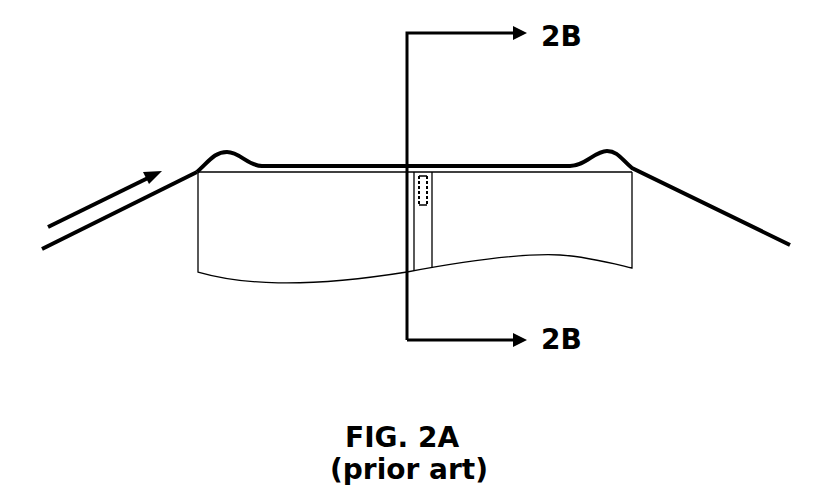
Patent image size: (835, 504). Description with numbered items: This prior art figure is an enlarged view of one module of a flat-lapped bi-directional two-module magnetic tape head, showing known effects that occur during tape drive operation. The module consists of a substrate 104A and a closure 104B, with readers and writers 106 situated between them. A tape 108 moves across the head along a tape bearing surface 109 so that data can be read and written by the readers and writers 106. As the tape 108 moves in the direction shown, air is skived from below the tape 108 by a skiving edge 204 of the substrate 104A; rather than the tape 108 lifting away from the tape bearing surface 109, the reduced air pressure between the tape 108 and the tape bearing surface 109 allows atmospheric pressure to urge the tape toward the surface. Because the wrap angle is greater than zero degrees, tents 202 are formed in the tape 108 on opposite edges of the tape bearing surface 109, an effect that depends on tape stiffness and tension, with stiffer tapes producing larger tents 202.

The substrate 104A is at (292, 270).
The closure 104B is at (552, 237).
The readers and writers 106 is at (423, 173).
The tape 108 is at (310, 163).
The tape bearing surface 109 is at (530, 166).
The tent 202 is at (218, 143).
The skiving edge 204 is at (195, 176).